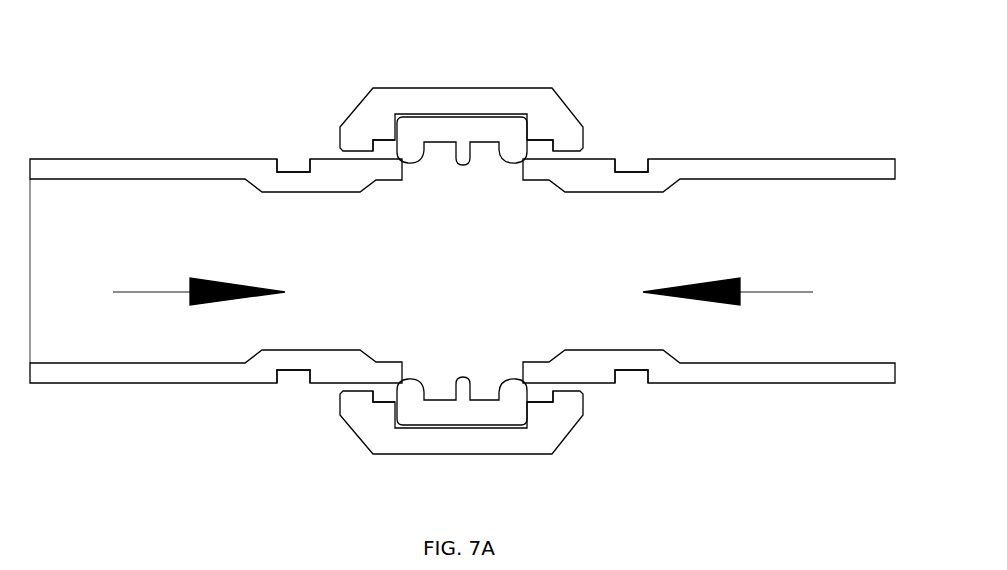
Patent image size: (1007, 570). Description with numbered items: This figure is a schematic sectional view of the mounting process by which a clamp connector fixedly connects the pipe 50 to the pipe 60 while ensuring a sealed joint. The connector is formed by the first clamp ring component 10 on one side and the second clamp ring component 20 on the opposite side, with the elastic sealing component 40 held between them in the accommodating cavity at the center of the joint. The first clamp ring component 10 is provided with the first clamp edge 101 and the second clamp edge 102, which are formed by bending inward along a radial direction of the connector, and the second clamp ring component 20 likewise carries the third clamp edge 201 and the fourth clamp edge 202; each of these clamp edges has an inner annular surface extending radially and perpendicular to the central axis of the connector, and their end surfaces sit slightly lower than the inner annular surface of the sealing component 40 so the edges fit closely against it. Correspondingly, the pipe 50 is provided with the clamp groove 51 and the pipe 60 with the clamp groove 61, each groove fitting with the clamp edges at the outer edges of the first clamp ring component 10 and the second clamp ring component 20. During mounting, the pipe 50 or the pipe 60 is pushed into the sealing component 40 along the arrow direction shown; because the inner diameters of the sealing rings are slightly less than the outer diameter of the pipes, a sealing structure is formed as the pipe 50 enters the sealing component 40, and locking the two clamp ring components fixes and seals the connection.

The first clamp ring component 10 is at (383, 88).
The second clamp ring component 20 is at (433, 454).
The sealing component 40 is at (480, 125).
The pipe 50 is at (135, 159).
The clamp groove 51 is at (290, 172).
The pipe 60 is at (802, 159).
The clamp groove 61 is at (622, 172).
The first clamp edge 101 is at (577, 150).
The second clamp edge 102 is at (345, 145).
The third clamp edge 201 is at (578, 391).
The fourth clamp edge 202 is at (347, 390).